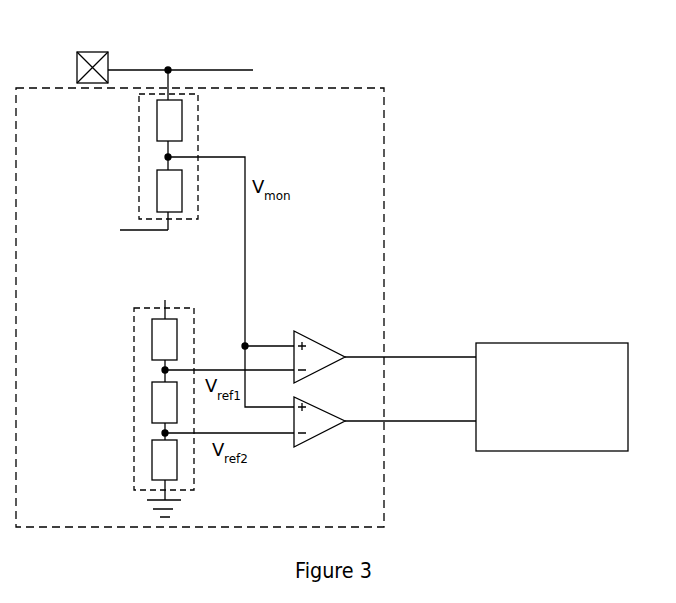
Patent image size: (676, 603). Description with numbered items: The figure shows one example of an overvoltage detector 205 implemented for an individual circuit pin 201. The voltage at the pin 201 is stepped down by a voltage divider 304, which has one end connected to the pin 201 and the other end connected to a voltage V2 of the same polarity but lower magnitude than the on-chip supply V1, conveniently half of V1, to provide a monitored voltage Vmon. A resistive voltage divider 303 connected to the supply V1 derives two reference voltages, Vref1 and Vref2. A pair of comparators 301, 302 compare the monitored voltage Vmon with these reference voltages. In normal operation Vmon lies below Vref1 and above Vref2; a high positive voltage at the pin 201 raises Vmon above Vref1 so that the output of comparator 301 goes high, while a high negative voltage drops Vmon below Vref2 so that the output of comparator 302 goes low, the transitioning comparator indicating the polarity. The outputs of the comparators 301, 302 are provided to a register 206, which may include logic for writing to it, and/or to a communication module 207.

The pin 201 is at (77, 70).
The overvoltage detector 205 is at (200, 307).
The register 206 is at (552, 397).
The communication module 207 is at (552, 397).
The comparator 301 is at (317, 340).
The comparator 302 is at (325, 408).
The resistive voltage divider 303 is at (135, 412).
The voltage divider 304 is at (139, 146).